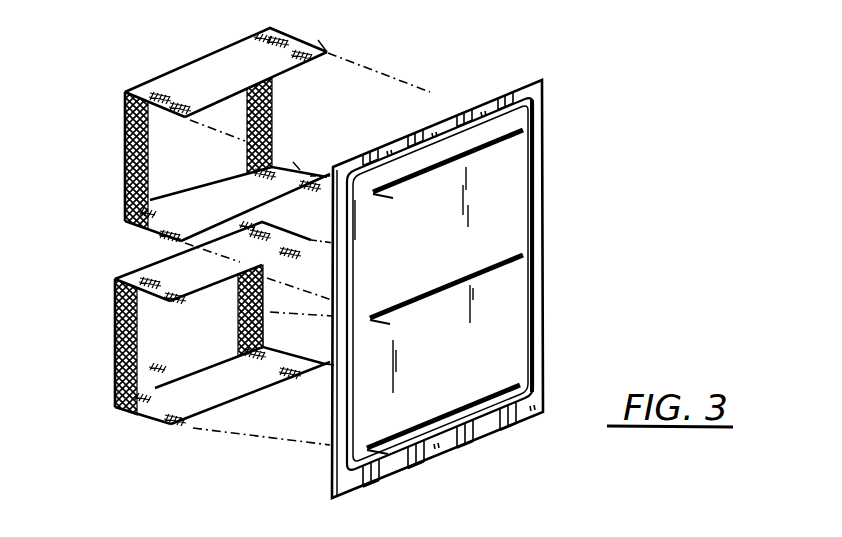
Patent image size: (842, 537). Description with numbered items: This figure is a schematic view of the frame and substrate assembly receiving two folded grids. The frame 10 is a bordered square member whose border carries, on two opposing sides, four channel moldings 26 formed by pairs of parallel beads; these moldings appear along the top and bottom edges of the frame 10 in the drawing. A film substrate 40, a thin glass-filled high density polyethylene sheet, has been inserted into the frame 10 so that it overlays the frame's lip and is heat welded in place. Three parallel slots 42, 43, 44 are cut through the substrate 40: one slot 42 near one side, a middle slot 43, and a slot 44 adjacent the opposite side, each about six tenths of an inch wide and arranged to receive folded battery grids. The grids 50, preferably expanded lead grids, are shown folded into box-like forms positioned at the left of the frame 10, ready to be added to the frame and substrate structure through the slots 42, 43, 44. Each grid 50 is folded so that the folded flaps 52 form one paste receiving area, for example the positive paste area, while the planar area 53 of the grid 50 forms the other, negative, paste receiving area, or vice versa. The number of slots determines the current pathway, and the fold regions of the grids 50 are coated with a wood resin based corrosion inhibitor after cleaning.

The frame 10 is at (548, 172).
The channel moldings 26 is at (411, 138).
The film substrate 40 is at (480, 298).
The slot 42 is at (470, 148).
The slot 43 is at (508, 257).
The slot 44 is at (508, 382).
The grids 50 is at (150, 62).
The folded flaps 52 is at (295, 162).
The planar area 53 is at (123, 146).